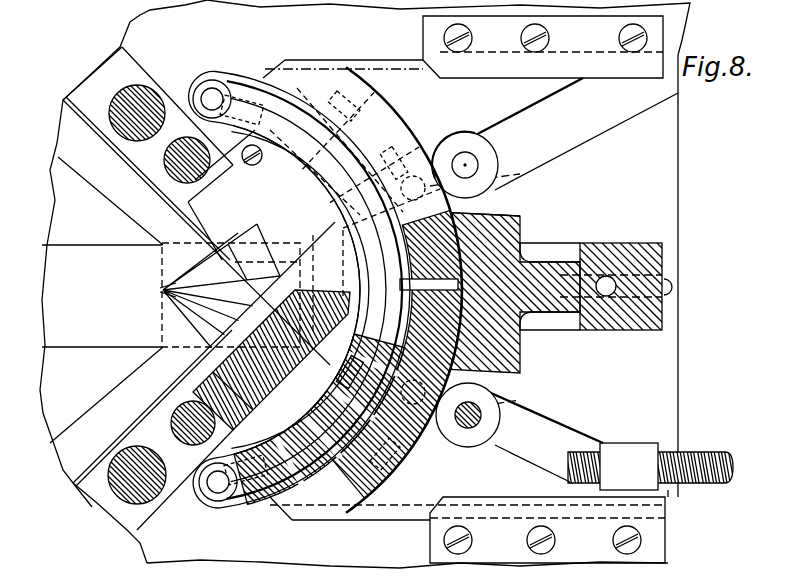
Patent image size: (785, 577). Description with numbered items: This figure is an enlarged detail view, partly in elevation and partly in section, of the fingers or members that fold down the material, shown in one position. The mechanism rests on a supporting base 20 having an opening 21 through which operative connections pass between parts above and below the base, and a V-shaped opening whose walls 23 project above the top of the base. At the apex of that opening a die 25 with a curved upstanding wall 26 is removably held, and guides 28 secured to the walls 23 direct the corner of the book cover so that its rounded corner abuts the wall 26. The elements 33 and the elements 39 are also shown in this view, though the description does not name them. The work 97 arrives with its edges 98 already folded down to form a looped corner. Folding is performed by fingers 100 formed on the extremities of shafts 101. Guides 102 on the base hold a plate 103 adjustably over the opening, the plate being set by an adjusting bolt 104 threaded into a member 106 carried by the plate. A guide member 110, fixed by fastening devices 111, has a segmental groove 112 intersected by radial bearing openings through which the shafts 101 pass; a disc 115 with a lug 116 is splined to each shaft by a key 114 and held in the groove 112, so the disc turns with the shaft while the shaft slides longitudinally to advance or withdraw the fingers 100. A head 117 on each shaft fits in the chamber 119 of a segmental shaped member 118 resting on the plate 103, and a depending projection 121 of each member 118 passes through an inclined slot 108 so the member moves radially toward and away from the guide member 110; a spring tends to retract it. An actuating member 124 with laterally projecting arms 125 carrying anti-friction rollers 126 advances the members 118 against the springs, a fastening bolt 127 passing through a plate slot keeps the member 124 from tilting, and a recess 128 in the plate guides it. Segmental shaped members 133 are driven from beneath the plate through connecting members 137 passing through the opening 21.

The supporting base 20 is at (365, 284).
The opening 21 is at (231, 72).
The walls 23 is at (97, 80).
The die 25 is at (262, 290).
The curved upstanding wall 26 is at (203, 328).
The guides 28 is at (76, 108).
The roller 33 is at (123, 123).
The roller 39 is at (168, 172).
The work 97 is at (47, 378).
The edges 98 is at (128, 210).
The fingers 100 is at (163, 290).
The shafts 101 is at (336, 300).
The guides 102 is at (423, 30).
The plate 103 is at (655, 193).
The adjusting bolt 104 is at (712, 462).
The member 106 is at (633, 448).
The slots 108 is at (455, 133).
The guide member 110 is at (300, 100).
The fastening devices 111 is at (244, 172).
The segmental groove 112 is at (364, 286).
The key or feather 114 is at (352, 372).
The disc 115 is at (360, 302).
The lug or pin 116 is at (428, 312).
The disc or head 117 is at (360, 75).
The segmental shaped member 118 is at (387, 115).
The chamber 119 is at (473, 282).
The depending projection 121 is at (420, 178).
The actuating member 124 is at (617, 248).
The laterally projecting arms 125 is at (510, 228).
The anti-friction rollers 126 is at (460, 133).
The fastening bolt 127 is at (598, 333).
The recess 128 is at (558, 250).
The segmental shaped members 133 is at (263, 73).
The connecting members 137 is at (205, 91).